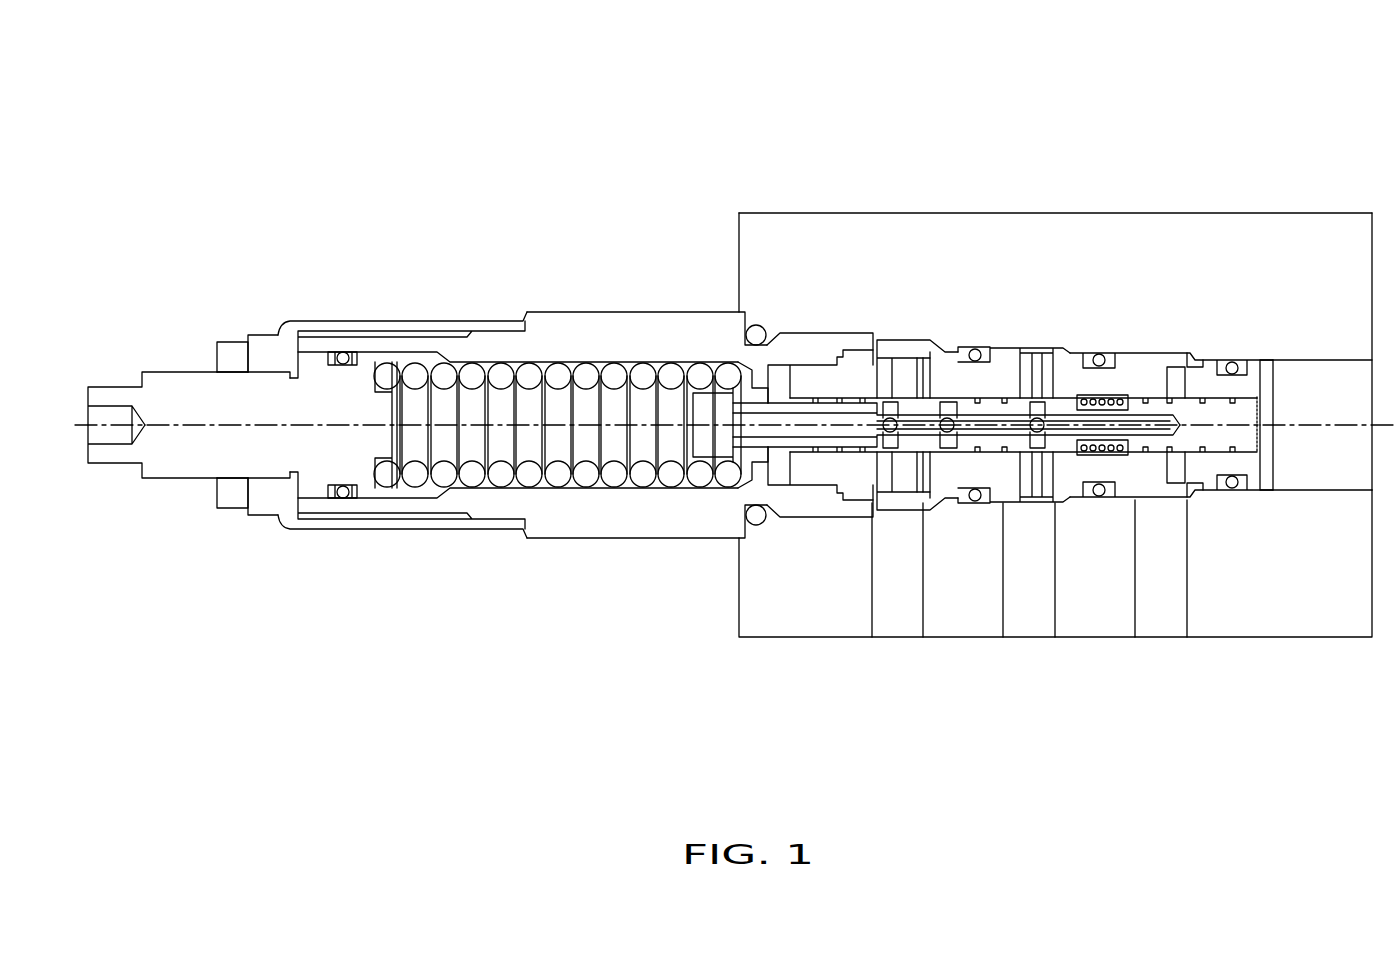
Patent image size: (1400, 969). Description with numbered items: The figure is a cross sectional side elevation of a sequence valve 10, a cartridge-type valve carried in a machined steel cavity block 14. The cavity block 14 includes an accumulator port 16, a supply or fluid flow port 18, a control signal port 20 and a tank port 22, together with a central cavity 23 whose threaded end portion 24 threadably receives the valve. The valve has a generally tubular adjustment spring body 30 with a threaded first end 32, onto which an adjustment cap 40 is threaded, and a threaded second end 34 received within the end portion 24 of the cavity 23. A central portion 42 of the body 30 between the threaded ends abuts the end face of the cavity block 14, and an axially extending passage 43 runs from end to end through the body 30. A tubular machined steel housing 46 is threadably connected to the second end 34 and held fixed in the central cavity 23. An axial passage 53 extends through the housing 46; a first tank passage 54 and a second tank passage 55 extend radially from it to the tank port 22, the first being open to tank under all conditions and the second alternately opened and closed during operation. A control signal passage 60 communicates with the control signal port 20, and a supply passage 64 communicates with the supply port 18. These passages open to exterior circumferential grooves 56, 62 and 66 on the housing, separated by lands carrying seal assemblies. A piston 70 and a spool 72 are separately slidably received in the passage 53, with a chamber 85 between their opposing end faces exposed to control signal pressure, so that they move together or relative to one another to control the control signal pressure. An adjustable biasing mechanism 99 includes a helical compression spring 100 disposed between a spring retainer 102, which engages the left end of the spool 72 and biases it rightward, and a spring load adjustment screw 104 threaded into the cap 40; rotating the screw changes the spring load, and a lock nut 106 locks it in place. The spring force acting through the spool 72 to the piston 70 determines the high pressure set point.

The sequence valve 10 is at (1355, 165).
The cavity block 14 is at (1318, 618).
The accumulator port 16 is at (1372, 476).
The supply or fluid flow port 18 is at (1144, 620).
The control signal port 20 is at (1018, 615).
The tank port 22 is at (892, 613).
The central cavity 23 is at (1320, 362).
The threaded end portion 24 is at (806, 610).
The adjustment spring body 30 is at (525, 540).
The first end 32 is at (460, 503).
The second end 34 is at (788, 505).
The adjustment cap 40 is at (257, 503).
The central portion 42 is at (608, 532).
The axially extending passage 43 is at (666, 497).
The housing 46 is at (1247, 467).
The axial passage 53 is at (1250, 412).
The first tank passage 54 is at (890, 368).
The second tank passage 55 is at (925, 368).
The exterior circumferential groove 56 is at (905, 507).
The control signal passage 60 is at (1030, 370).
The exterior circumferential groove 62 is at (1039, 507).
The supply or flow source passage 64 is at (1177, 500).
The exterior circumferential groove 66 is at (1192, 505).
The piston 70 is at (1212, 395).
The spool 72 is at (993, 410).
The chamber 85 is at (1088, 396).
The adjustable biasing mechanism 99 is at (190, 370).
The helical compression spring 100 is at (560, 378).
The spring retainer 102 is at (710, 400).
The spring load adjustment screw 104 is at (343, 355).
The lock nut 106 is at (232, 357).